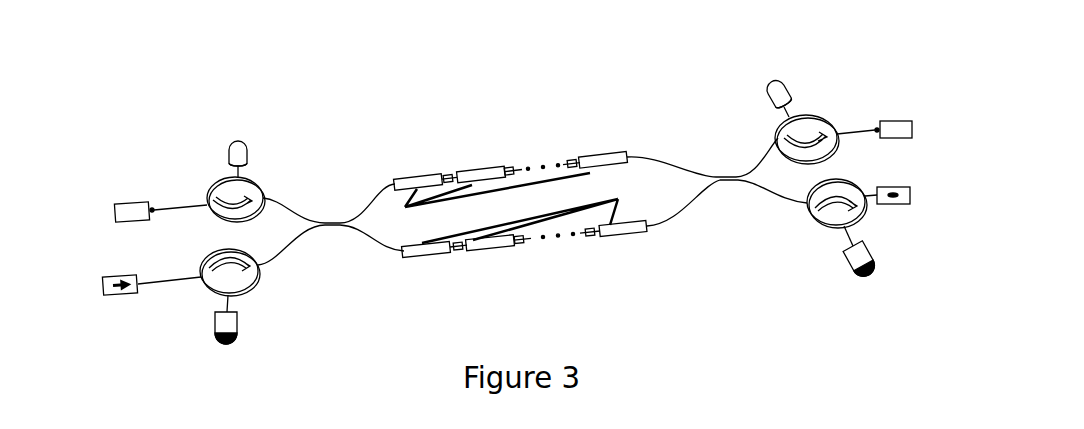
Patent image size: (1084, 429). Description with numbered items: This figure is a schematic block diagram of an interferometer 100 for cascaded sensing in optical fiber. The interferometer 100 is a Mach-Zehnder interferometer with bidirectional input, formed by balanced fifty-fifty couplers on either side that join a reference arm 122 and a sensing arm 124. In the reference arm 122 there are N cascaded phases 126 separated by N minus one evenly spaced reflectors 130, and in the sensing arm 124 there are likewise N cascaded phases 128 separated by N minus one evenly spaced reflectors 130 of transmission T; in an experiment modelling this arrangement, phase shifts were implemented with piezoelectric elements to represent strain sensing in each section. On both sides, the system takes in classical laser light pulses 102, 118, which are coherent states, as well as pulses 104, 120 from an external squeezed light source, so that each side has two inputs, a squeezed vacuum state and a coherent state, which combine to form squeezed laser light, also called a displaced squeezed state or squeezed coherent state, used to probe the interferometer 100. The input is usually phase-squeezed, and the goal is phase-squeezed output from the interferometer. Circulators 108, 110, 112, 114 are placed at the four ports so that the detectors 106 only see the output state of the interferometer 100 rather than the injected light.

The interferometer 100 is at (525, 87).
The classical laser light pulses 102 is at (133, 204).
The pulses from external squeezed light source 104 is at (122, 281).
The detectors 106 is at (546, 221).
The circulator 108 is at (256, 191).
The circulator 110 is at (247, 282).
The circulator 112 is at (809, 127).
The circulator 114 is at (827, 216).
The classical laser light pulses 118 is at (898, 121).
The pulses from external squeezed light source 120 is at (900, 184).
The reference arm 122 is at (648, 150).
The sensing arm 124 is at (368, 257).
The cascaded phases 126 is at (500, 182).
The cascaded phases 128 is at (530, 232).
The reflectors 130 is at (572, 160).